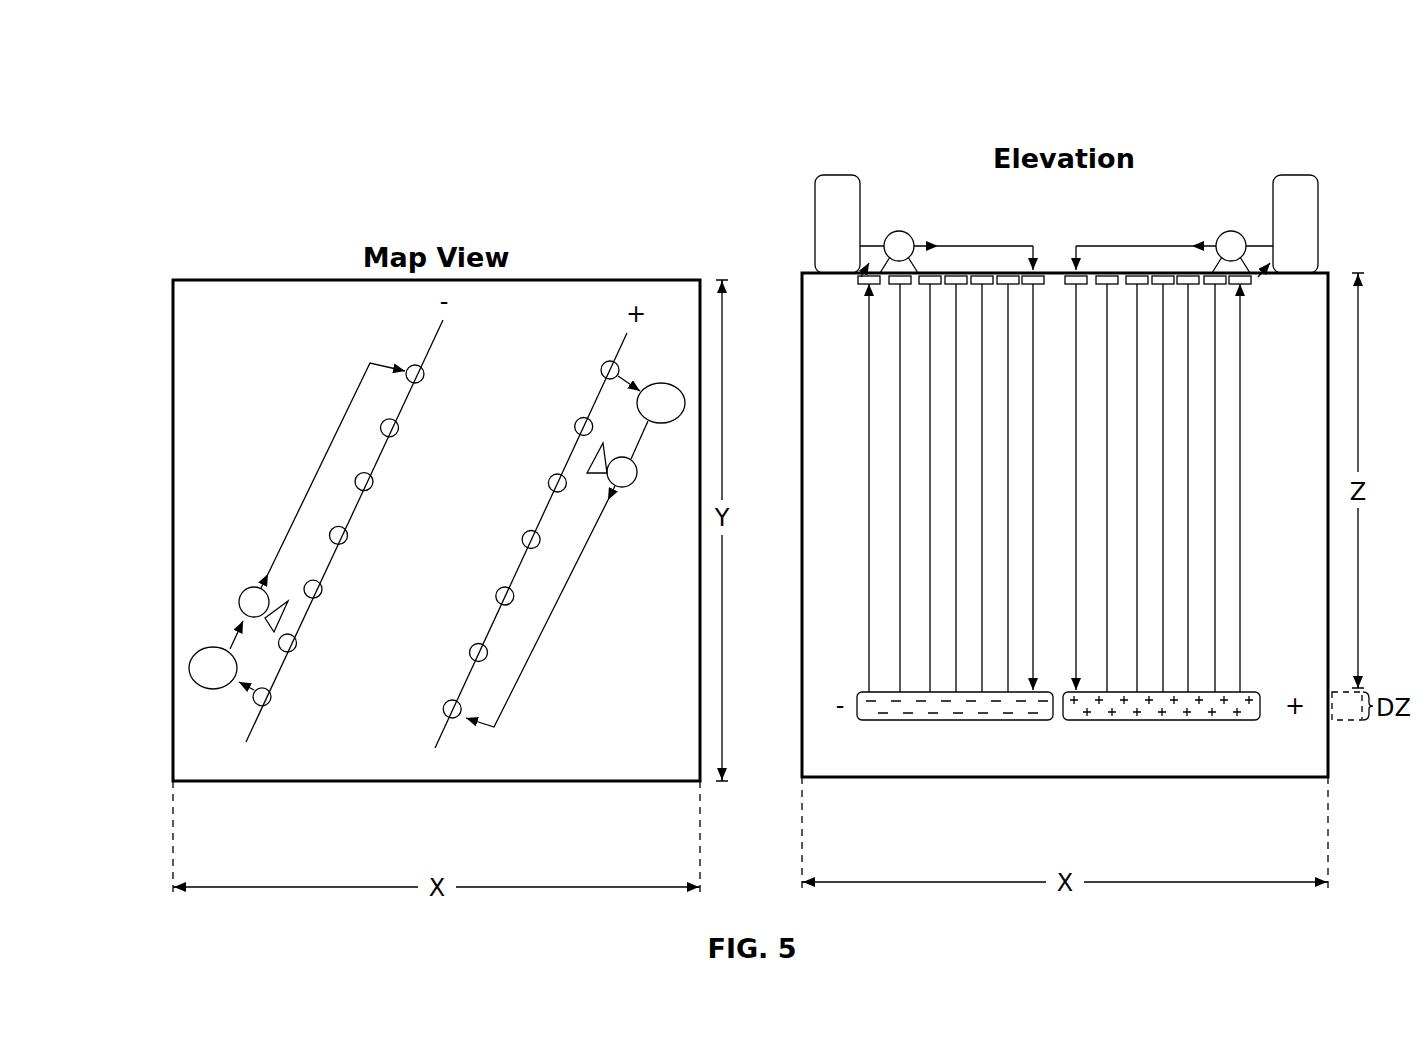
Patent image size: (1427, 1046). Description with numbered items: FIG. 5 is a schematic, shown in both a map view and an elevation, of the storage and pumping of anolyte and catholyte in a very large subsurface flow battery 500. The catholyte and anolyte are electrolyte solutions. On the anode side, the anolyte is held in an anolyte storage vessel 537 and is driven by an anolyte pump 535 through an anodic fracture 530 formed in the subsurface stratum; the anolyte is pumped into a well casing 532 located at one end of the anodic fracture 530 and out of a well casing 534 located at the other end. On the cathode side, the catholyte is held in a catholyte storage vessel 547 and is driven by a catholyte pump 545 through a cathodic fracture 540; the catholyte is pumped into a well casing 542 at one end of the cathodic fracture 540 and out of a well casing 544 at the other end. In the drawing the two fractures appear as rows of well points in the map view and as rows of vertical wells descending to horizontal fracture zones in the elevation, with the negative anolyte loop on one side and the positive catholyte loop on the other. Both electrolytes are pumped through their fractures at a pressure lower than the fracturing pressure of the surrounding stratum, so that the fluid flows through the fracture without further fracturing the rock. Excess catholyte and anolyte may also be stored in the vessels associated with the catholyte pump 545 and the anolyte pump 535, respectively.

The subsurface flow battery 500 is at (140, 74).
The anodic fracture 530 is at (436, 343).
The well casing 532 is at (272, 702).
The well casing 534 is at (420, 382).
The anolyte pump 535 is at (250, 588).
The anolyte storage vessel 537 is at (815, 225).
The cathodic fracture 540 is at (437, 750).
The well casing 542 is at (447, 707).
The well casing 544 is at (603, 370).
The catholyte pump 545 is at (625, 487).
The catholyte storage vessel 547 is at (1318, 226).